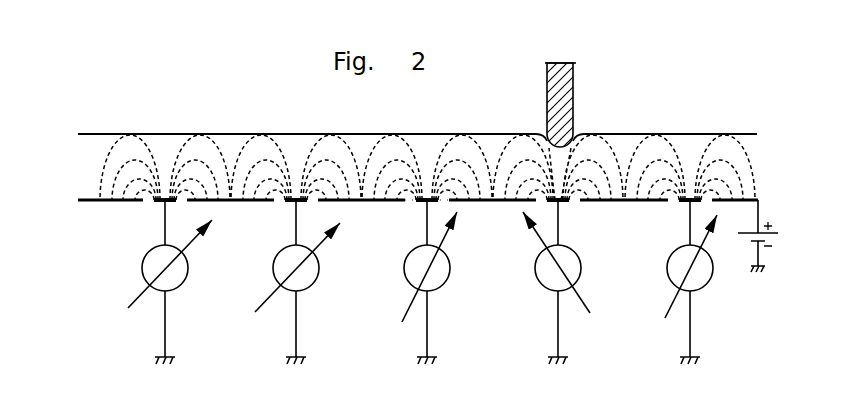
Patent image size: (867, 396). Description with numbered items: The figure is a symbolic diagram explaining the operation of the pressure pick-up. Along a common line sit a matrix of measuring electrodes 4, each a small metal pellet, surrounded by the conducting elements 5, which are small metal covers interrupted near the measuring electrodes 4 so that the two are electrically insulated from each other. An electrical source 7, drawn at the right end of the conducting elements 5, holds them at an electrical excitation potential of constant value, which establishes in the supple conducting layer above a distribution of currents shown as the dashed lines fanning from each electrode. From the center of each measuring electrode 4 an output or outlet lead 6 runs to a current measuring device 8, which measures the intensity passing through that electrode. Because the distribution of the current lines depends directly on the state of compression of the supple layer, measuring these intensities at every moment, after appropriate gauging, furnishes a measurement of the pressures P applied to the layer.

The pressures P is at (548, 63).
The measuring electrodes 4 is at (287, 204).
The conducting elements 5 is at (392, 204).
The output or outlet lead 6 is at (423, 208).
The electrical source 7 is at (768, 266).
The current measuring device 8 is at (449, 284).